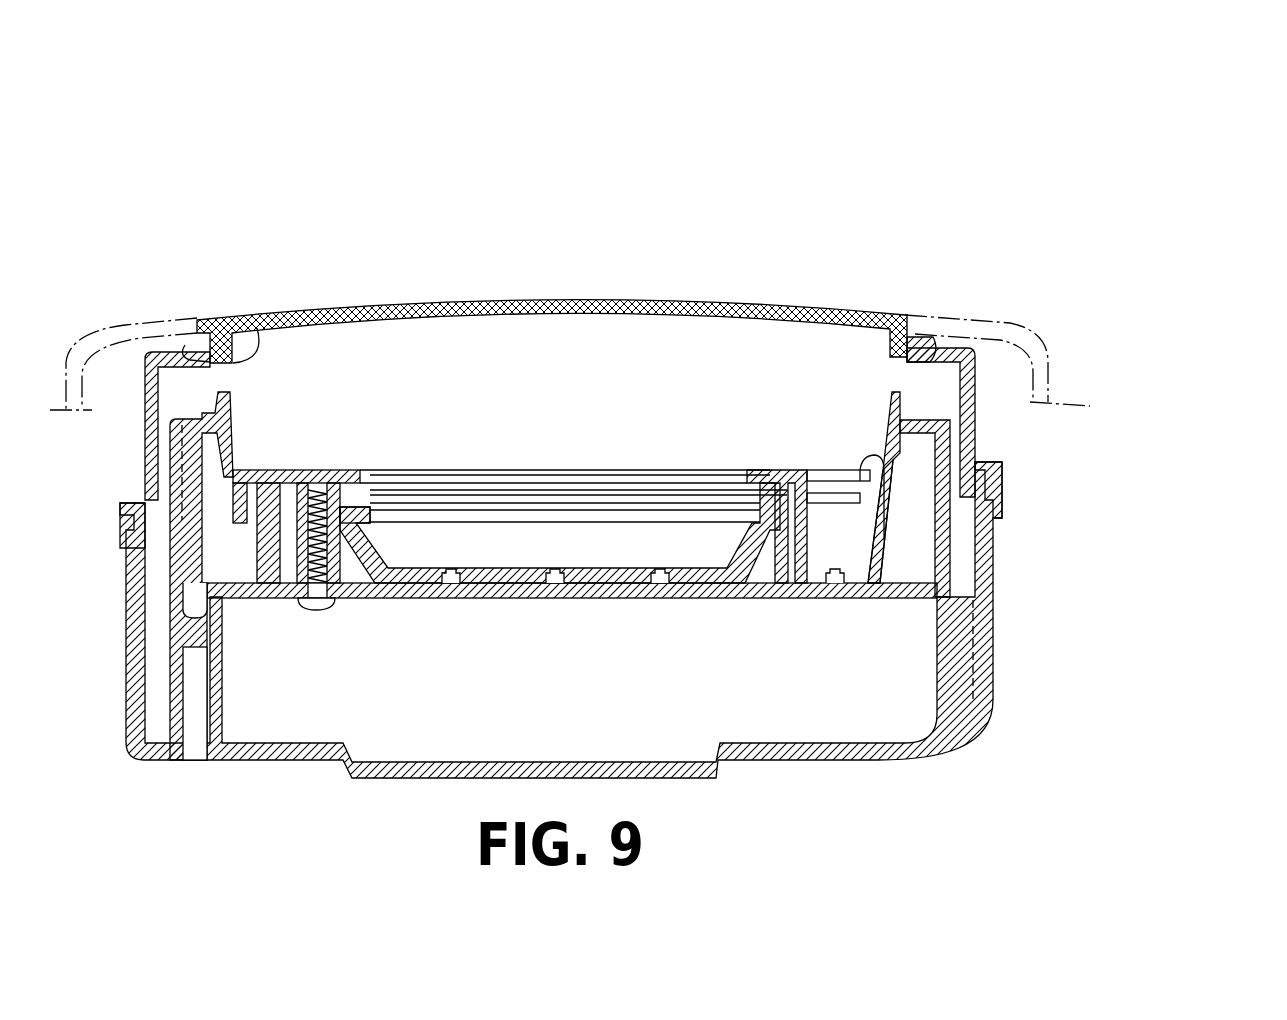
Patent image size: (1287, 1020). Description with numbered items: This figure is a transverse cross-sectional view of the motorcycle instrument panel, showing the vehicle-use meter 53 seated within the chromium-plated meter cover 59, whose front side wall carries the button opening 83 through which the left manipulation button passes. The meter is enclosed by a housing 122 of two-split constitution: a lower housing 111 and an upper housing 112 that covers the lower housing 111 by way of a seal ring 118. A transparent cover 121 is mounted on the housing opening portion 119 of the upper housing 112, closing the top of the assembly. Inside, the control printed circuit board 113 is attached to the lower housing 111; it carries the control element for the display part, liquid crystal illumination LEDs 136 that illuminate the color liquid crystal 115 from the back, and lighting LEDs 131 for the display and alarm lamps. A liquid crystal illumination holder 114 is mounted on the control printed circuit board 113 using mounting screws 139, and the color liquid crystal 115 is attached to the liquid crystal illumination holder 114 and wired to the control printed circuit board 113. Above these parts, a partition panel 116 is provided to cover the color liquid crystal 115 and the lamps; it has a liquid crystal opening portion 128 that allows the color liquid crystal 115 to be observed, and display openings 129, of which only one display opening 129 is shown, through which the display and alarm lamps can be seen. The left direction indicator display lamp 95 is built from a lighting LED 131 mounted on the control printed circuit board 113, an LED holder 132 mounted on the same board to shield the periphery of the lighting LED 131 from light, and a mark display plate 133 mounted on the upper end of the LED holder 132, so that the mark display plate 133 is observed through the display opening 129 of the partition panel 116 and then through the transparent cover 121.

The vehicle-use meter 53 is at (641, 433).
The meter cover 59 is at (605, 285).
The button opening 83 is at (970, 294).
The left direction indicator display lamp 95 is at (819, 414).
The lower housing 111 is at (651, 620).
The upper housing 112 is at (663, 424).
The control printed circuit board 113 is at (373, 461).
The liquid crystal illumination holder 114 is at (560, 472).
The color liquid crystal 115 is at (573, 441).
The partition panel 116 is at (921, 390).
The seal ring 118 is at (622, 505).
The housing opening portion 119 is at (221, 279).
The transparent cover 121 is at (557, 254).
The housing 122 is at (688, 563).
The liquid crystal opening portion 128 is at (266, 560).
The display opening 129 is at (901, 519).
The lighting LED 131 is at (809, 451).
The LED holder 132 is at (902, 559).
The mark display plate 133 is at (847, 454).
The liquid crystal illumination LED 136 is at (643, 491).
The mounting screw 139 is at (298, 606).